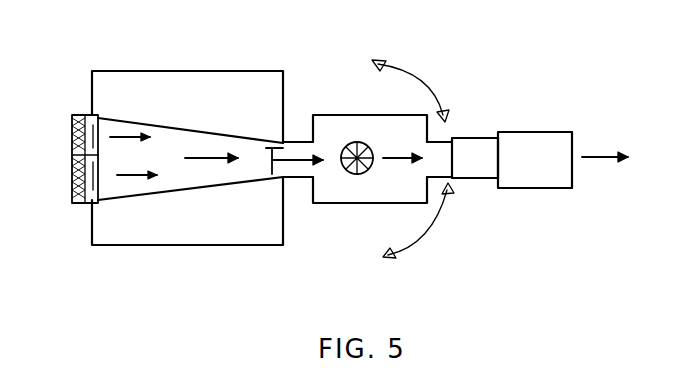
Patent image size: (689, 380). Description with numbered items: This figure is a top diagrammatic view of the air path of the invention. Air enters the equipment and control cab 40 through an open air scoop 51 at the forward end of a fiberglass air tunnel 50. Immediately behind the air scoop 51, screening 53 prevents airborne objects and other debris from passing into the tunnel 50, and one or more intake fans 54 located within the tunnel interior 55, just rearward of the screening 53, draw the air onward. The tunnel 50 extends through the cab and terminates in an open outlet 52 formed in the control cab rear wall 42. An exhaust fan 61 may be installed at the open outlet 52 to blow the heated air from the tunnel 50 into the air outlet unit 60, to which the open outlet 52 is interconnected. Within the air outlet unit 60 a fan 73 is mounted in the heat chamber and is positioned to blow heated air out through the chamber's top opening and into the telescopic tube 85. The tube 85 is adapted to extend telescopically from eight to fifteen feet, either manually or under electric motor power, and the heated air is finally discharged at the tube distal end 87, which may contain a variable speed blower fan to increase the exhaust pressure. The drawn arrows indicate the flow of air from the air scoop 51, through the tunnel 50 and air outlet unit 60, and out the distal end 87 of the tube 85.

The equipment and control cab 40 is at (190, 70).
The control cab rear wall 42 is at (285, 87).
The fiberglass air tunnel 50 is at (178, 133).
The air scoop 51 is at (66, 128).
The open outlet 52 is at (280, 147).
The screening 53 is at (77, 110).
The intake fan 54 is at (95, 115).
The tunnel interior 55 is at (193, 172).
The air outlet unit 60 is at (375, 205).
The exhaust fan 61 is at (350, 176).
The fan 73 is at (357, 158).
The tube 85 is at (470, 138).
The distal end 87 is at (572, 138).